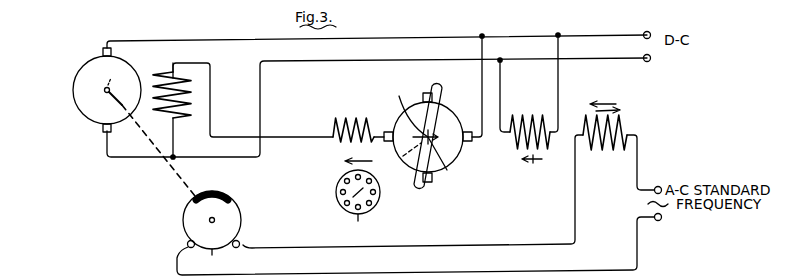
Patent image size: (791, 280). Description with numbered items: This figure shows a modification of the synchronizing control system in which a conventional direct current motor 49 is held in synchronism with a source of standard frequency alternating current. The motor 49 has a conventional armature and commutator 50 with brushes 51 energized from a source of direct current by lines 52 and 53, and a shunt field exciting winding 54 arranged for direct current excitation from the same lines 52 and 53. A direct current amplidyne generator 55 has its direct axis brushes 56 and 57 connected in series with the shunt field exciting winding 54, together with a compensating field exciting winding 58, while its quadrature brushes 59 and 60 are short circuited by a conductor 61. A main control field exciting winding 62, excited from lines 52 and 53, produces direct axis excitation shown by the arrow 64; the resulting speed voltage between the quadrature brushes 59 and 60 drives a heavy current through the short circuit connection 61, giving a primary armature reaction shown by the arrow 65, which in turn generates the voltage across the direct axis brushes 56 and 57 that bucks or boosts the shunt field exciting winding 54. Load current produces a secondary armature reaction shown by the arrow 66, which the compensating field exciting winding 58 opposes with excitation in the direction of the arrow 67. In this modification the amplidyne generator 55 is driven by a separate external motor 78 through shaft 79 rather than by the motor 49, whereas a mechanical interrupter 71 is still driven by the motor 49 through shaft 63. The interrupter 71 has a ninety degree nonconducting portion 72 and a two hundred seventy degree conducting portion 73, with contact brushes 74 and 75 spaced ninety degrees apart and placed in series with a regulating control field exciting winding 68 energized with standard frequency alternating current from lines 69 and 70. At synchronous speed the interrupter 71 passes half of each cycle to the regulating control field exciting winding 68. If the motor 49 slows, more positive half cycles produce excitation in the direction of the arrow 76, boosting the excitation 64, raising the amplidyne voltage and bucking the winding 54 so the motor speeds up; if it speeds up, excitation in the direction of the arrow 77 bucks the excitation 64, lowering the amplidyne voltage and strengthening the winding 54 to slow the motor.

The direct current motor 49 is at (70, 85).
The armature and commutator 50 is at (124, 59).
The brushes 51 is at (102, 50).
The line 52 is at (650, 32).
The line 53 is at (651, 60).
The shunt field exciting winding 54 is at (193, 112).
The direct current amplidyne generator 55 is at (472, 159).
The direct axis brush 56 is at (386, 131).
The direct axis brush 57 is at (468, 131).
The compensating field exciting winding 58 is at (348, 117).
The quadrature brush 59 is at (424, 92).
The quadrature brush 60 is at (431, 183).
The conductor 61 is at (444, 84).
The main control field exciting winding 62 is at (524, 115).
The shaft 63 is at (166, 164).
The arrow 64 is at (532, 167).
The arrow 65 is at (405, 108).
The arrow 66 is at (450, 166).
The arrow 67 is at (348, 163).
The regulating control field exciting winding 68 is at (606, 150).
The line 69 is at (657, 186).
The line 70 is at (662, 217).
The mechanical interrupter 71 is at (246, 212).
The nonconducting portion 72 is at (213, 196).
The conducting portion 73 is at (209, 260).
The contact brush 74 is at (186, 243).
The contact brush 75 is at (242, 243).
The arrow 76 is at (600, 103).
The arrow 77 is at (622, 106).
The separate external motor 78 is at (358, 204).
The shaft 79 is at (398, 160).